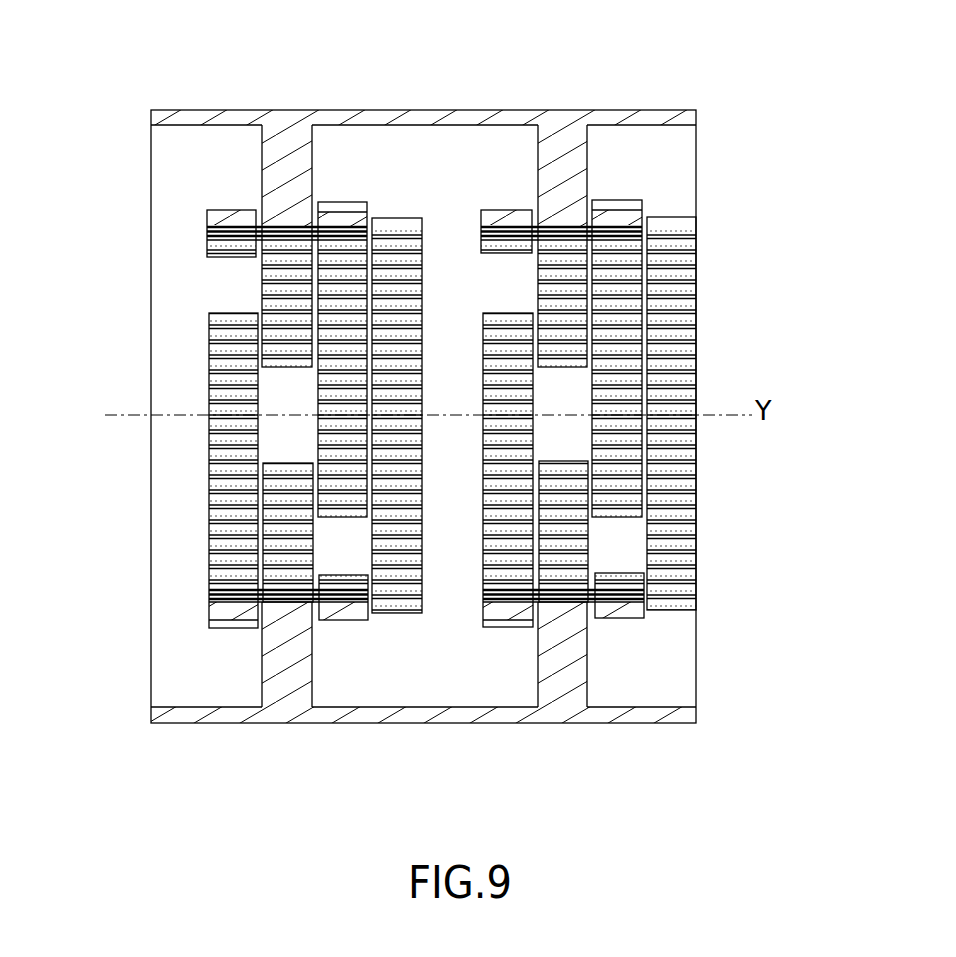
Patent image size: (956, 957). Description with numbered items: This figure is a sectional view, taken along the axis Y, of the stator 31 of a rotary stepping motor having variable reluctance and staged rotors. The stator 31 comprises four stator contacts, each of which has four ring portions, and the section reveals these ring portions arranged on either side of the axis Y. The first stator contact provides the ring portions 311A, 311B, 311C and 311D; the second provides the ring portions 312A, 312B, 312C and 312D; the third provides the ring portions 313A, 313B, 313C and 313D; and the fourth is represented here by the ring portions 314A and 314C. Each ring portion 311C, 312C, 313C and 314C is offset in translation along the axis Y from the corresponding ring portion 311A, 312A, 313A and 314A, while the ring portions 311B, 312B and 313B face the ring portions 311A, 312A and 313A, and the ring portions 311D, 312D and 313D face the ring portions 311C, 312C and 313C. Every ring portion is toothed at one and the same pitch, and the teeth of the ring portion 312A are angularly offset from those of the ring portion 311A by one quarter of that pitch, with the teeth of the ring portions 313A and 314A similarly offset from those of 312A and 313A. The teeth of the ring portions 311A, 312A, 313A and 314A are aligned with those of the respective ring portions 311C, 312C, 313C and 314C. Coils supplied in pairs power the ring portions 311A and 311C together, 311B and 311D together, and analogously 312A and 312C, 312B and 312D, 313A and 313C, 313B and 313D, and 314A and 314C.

The stator 31 is at (648, 112).
The ring portion 311A is at (207, 225).
The ring portion 311B is at (209, 357).
The ring portion 311C is at (502, 210).
The ring portion 311D is at (505, 608).
The ring portion 312A is at (262, 278).
The ring portion 312B is at (265, 550).
The ring portion 312C is at (565, 330).
The ring portion 312D is at (573, 552).
The ring portion 313A is at (334, 203).
The ring portion 313B is at (342, 610).
The ring portion 313C is at (645, 200).
The ring portion 313D is at (620, 610).
The ring portion 314A is at (397, 218).
The ring portion 314C is at (687, 264).